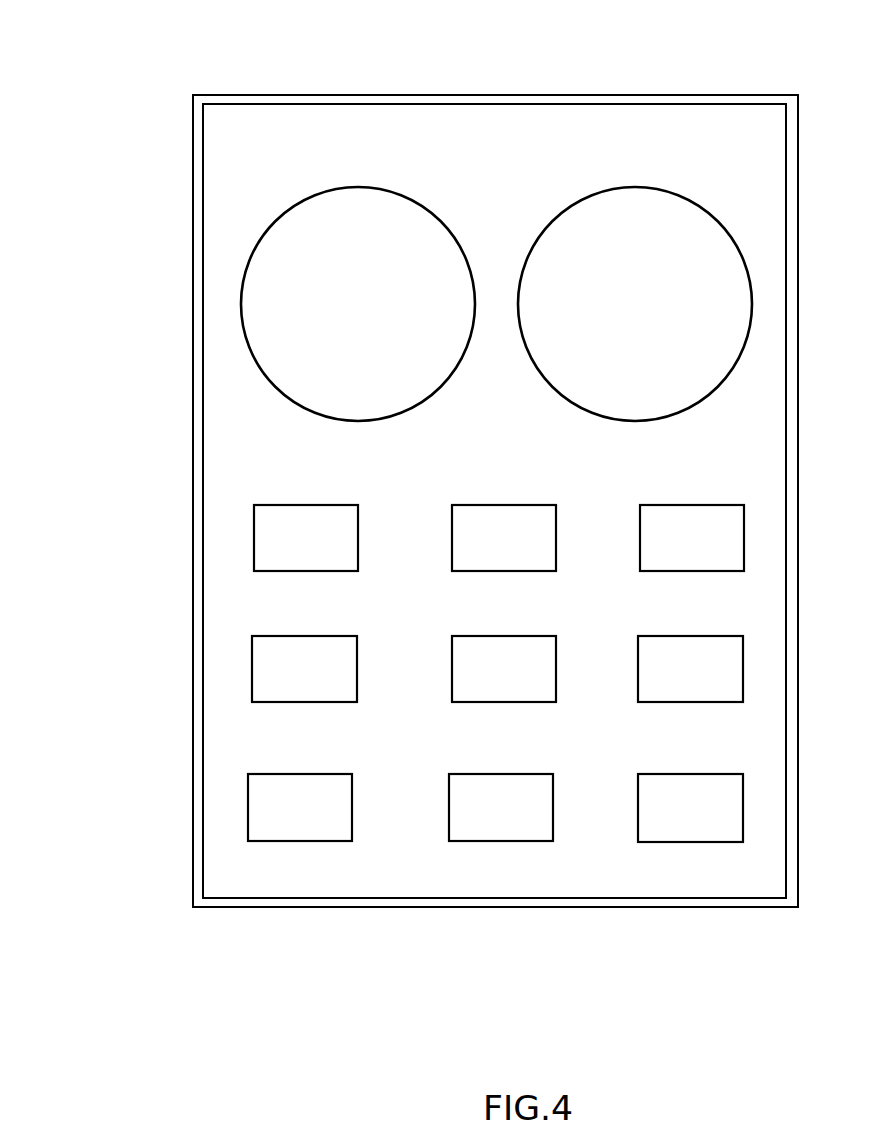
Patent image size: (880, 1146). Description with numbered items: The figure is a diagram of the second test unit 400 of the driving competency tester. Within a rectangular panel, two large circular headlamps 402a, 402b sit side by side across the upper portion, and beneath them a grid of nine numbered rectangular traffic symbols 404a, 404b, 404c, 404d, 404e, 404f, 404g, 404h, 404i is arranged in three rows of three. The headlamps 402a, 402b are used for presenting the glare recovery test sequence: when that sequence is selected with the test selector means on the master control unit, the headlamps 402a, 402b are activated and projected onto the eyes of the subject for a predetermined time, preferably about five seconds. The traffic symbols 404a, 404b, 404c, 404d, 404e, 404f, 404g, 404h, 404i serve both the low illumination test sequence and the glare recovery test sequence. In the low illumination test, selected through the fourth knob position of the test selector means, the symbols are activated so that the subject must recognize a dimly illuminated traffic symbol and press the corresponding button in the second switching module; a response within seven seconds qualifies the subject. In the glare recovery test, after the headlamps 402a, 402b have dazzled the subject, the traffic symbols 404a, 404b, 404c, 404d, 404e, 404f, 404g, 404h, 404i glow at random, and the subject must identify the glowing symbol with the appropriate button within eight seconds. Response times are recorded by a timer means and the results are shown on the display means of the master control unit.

The second test unit 400 is at (123, 51).
The headlamp 402a is at (408, 197).
The headlamp 402b is at (685, 197).
The traffic symbol 404a is at (302, 505).
The traffic symbol 404b is at (500, 505).
The traffic symbol 404c is at (692, 505).
The traffic symbol 404d is at (302, 636).
The traffic symbol 404e is at (500, 636).
The traffic symbol 404f is at (690, 636).
The traffic symbol 404g is at (300, 774).
The traffic symbol 404h is at (500, 774).
The traffic symbol 404i is at (690, 774).